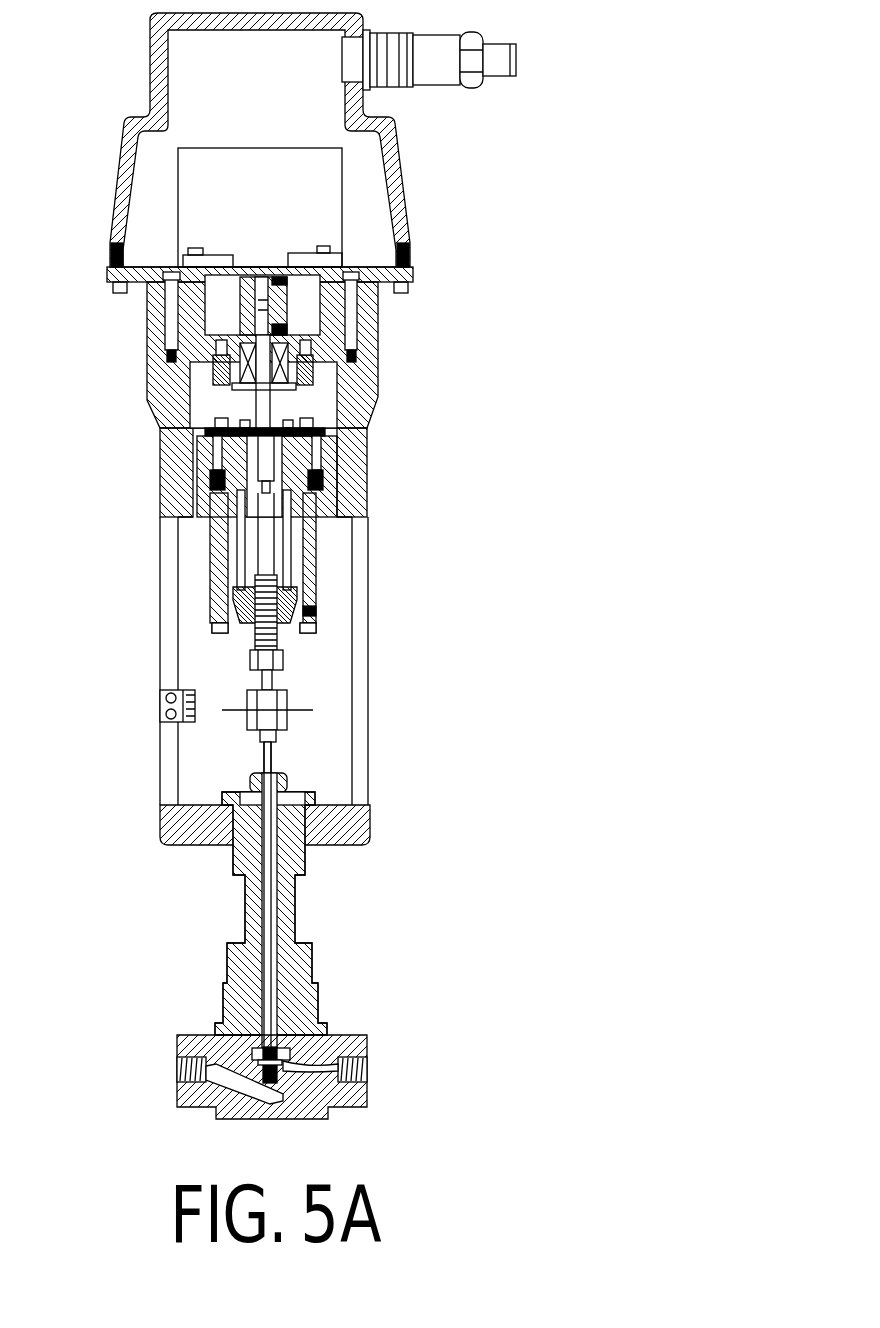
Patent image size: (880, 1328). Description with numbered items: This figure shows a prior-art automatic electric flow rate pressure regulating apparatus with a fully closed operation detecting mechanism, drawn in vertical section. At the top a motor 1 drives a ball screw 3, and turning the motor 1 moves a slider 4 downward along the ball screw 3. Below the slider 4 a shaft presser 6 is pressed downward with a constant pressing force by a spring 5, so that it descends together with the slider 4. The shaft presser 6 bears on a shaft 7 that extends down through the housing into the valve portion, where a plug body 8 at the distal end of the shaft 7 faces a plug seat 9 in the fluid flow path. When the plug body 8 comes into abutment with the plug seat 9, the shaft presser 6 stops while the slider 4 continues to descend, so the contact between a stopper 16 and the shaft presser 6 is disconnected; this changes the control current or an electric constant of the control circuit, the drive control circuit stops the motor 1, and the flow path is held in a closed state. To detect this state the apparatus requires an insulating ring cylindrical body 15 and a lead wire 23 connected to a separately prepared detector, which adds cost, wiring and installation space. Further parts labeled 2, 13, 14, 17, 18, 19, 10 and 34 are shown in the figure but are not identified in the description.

The motor 1 is at (340, 180).
The motor coupling hub 2 is at (263, 292).
The bearing 13 is at (288, 350).
The actuator housing 34 is at (158, 430).
The ball screw 3 is at (268, 458).
The slider 4 is at (287, 467).
The spring 5 is at (237, 547).
The shaft presser 6 is at (237, 598).
The cylinder 14 is at (316, 552).
The insulating ring cylindrical body 15 is at (317, 600).
The lead wire 23 is at (316, 613).
The washer 17 is at (316, 637).
The retaining ring 18 is at (240, 626).
The stopper 16 is at (292, 626).
The shaft 7 is at (268, 757).
The flow passage 19 is at (226, 1072).
The valve body 10 is at (177, 1045).
The plug body 8 is at (300, 1043).
The plug seat 9 is at (320, 1046).